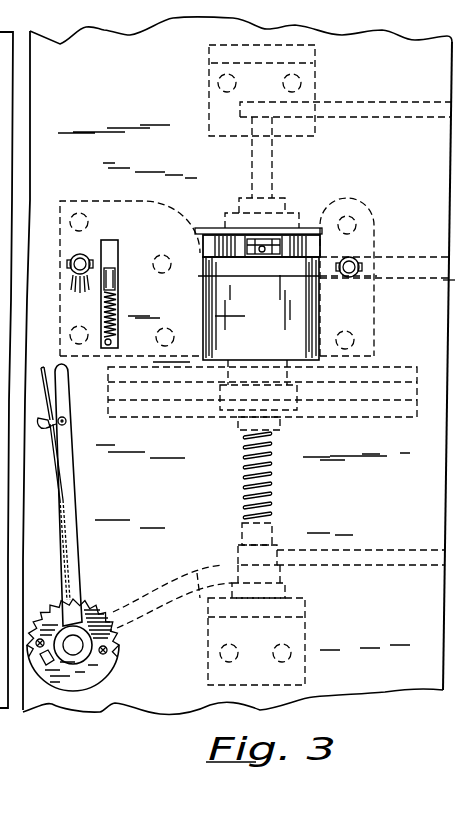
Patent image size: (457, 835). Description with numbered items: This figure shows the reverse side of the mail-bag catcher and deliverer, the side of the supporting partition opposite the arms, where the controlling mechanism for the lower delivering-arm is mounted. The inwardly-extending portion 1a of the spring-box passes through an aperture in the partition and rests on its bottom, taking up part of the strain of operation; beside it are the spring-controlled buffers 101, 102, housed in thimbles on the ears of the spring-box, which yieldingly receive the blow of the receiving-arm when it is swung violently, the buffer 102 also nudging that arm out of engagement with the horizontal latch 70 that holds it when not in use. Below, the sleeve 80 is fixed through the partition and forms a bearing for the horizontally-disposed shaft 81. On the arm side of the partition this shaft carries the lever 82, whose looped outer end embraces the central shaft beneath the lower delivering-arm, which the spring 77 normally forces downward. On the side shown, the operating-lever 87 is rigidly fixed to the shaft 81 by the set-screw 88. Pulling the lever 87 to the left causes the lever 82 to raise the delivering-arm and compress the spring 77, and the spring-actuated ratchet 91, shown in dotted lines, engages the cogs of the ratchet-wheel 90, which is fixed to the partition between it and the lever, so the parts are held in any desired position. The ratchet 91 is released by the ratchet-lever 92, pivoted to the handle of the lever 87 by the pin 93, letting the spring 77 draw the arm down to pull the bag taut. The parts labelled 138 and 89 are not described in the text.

The inwardly-extending portion 1a is at (262, 327).
The cylinder head band 138 is at (290, 258).
The buffer 101 is at (70, 265).
The buffer 102 is at (372, 278).
The horizontal latch 70 is at (115, 272).
The spring 77 is at (273, 479).
The lever 82 is at (157, 613).
The operating-lever 87 is at (63, 475).
The spring-actuated ratchet 91 is at (78, 566).
The ratchet-lever 92 is at (50, 388).
The pin 93 is at (66, 421).
The ratchet-wheel 90 is at (97, 612).
The rivet 89 is at (40, 638).
The set-screw 88 is at (43, 665).
The horizontally-disposed shaft 81 is at (70, 662).
The sleeve 80 is at (97, 680).